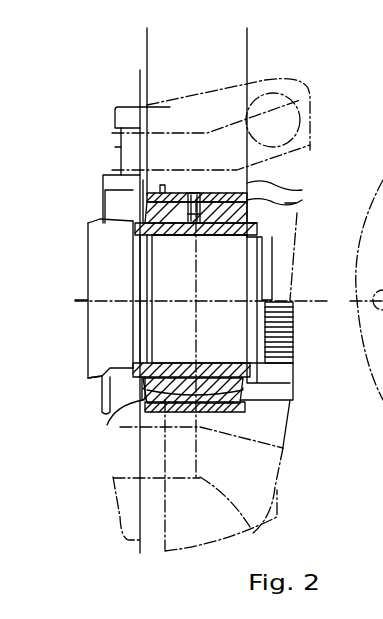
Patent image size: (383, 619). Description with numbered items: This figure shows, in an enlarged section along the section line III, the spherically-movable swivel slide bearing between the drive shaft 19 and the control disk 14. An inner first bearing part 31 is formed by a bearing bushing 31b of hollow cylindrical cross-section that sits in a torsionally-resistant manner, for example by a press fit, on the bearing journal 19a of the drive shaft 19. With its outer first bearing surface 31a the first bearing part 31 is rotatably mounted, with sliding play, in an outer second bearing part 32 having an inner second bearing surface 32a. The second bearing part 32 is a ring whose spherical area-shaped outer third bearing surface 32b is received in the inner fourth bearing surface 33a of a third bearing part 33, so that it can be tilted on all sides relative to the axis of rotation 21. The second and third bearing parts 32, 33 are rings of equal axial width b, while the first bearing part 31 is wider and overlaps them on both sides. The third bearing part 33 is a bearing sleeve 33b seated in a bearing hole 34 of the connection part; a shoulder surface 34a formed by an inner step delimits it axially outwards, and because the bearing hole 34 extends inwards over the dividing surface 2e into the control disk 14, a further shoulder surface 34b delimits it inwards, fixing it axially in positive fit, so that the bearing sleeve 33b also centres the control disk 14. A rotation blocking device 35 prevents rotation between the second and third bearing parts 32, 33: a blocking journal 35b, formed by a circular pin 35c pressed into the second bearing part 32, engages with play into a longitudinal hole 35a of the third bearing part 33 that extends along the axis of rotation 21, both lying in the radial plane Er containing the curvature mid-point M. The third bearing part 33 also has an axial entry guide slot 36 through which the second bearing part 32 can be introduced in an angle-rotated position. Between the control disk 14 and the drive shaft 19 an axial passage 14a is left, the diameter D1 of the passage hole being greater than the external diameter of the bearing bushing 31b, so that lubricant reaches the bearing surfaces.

The control disk 14 is at (128, 115).
The axial passage 14a is at (86, 242).
The drive shaft 19 is at (92, 328).
The bearing journal 19a is at (147, 345).
The axis of rotation 21 is at (80, 300).
The dividing surface 2e is at (175, 115).
The inner first bearing part 31 is at (128, 219).
The outer first bearing surface 31a is at (158, 247).
The bearing bushing 31b is at (108, 400).
The outer second bearing part 32 is at (218, 240).
The inner second bearing surface 32a is at (195, 245).
The outer third bearing surface 32b is at (208, 195).
The third bearing part 33 is at (247, 400).
The inner fourth bearing surface 33a is at (215, 410).
The bearing sleeve 33b is at (183, 408).
The bearing hole 34 is at (290, 184).
The shoulder surface 34a is at (296, 204).
The shoulder surface 34b is at (145, 195).
The rotation blocking device 35 is at (198, 190).
The longitudinal hole 35a is at (196, 128).
The blocking journal 35b is at (190, 192).
The circular pin 35c is at (247, 222).
The axial entry guide slot 36 is at (145, 202).
The curvature mid-point M is at (190, 301).
The radial plane Er is at (200, 320).
The axial width b is at (244, 33).
The diameter of the through hole D1 is at (30, 215).
The section line III is at (138, 72).